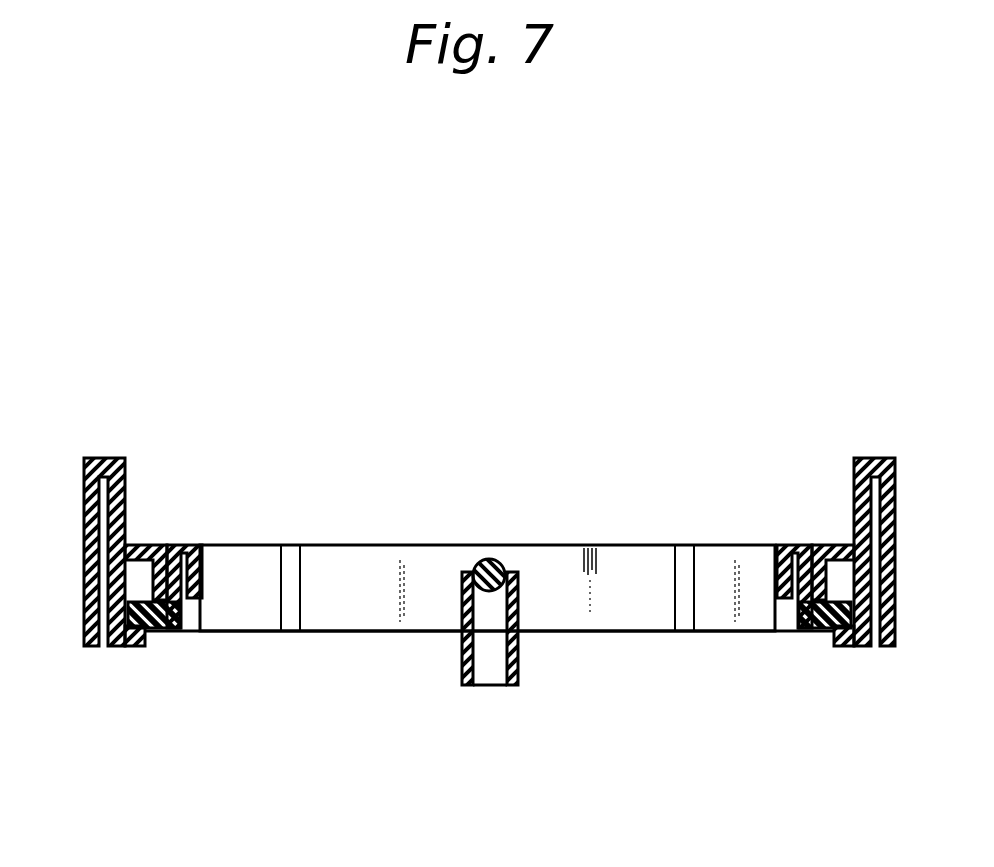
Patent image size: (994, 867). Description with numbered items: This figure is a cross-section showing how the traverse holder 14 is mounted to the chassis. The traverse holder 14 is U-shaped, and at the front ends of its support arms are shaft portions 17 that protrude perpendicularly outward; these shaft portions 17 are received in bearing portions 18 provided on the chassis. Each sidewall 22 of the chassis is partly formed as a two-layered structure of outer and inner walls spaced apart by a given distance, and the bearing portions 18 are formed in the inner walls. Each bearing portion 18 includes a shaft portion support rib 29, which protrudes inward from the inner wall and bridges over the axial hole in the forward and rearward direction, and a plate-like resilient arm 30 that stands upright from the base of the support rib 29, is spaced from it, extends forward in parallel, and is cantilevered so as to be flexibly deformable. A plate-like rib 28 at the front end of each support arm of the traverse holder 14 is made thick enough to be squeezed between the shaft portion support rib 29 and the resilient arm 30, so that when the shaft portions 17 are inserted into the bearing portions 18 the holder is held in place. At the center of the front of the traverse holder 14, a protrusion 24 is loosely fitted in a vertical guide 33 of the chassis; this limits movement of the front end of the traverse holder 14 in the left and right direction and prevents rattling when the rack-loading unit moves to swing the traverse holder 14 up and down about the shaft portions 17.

The traverse holder 14 is at (570, 536).
The shaft portions 17 is at (127, 617).
The bearing portions 18 is at (149, 535).
The sidewall 22 is at (125, 483).
The protrusion 24 is at (490, 558).
The plate-like rib 28 is at (178, 548).
The shaft portion support rib 29 is at (143, 624).
The resilient arm 30 is at (205, 580).
The vertical guide 33 is at (518, 655).